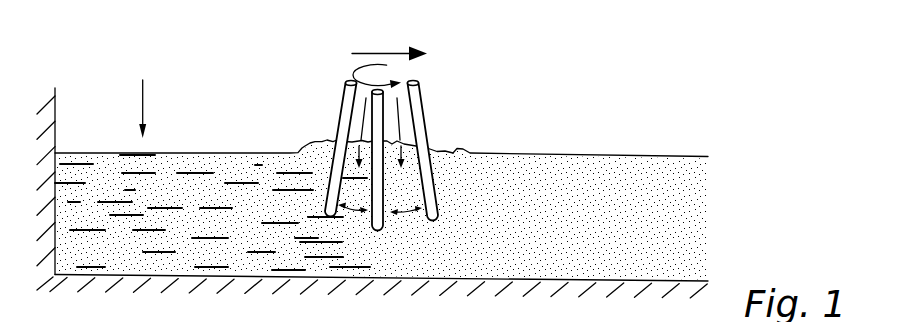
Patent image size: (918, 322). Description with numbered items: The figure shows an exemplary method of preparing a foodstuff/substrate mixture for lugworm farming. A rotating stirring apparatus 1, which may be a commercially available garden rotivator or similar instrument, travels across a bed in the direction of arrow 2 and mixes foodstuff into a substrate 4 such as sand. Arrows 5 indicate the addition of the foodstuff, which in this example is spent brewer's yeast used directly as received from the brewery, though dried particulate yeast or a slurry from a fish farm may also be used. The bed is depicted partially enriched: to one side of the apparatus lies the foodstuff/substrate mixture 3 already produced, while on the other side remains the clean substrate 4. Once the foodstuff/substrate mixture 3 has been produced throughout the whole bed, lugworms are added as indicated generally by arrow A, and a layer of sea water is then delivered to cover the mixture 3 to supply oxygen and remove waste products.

The rotating stirring apparatus 1 is at (350, 140).
The arrow indicating direction of movement 2 is at (378, 54).
The foodstuff/substrate mixture 3 is at (181, 206).
The substrate 4 is at (486, 221).
The arrows indicating addition of foodstuff 5 is at (362, 127).
The arrow indicating addition of lugworms A is at (142, 95).